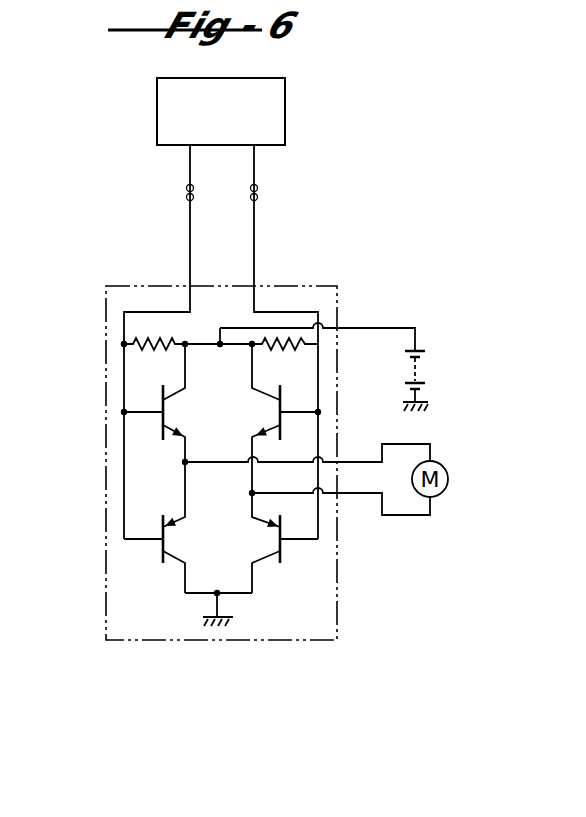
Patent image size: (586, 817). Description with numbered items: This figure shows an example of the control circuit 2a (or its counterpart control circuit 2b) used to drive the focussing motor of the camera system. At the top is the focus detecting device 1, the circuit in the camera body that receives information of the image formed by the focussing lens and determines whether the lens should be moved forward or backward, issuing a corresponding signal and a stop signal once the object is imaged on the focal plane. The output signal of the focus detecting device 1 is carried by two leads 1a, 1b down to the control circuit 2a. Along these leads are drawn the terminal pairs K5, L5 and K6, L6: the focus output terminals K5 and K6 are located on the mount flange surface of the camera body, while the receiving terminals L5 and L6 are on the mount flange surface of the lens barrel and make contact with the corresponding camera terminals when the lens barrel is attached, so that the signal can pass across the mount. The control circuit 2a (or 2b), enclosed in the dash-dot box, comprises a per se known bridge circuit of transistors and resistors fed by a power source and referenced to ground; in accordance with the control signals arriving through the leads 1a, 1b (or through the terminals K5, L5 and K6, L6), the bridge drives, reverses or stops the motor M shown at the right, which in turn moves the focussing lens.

The focus detecting device 1 is at (221, 111).
The lead 1a is at (190, 238).
The lead 1b is at (256, 250).
The focus output terminal K5 is at (194, 185).
The receiving terminal L5 is at (194, 199).
The focus output terminal K6 is at (258, 185).
The receiving terminal L6 is at (258, 199).
The control circuit 2a is at (328, 298).
The control circuit 2b is at (268, 463).